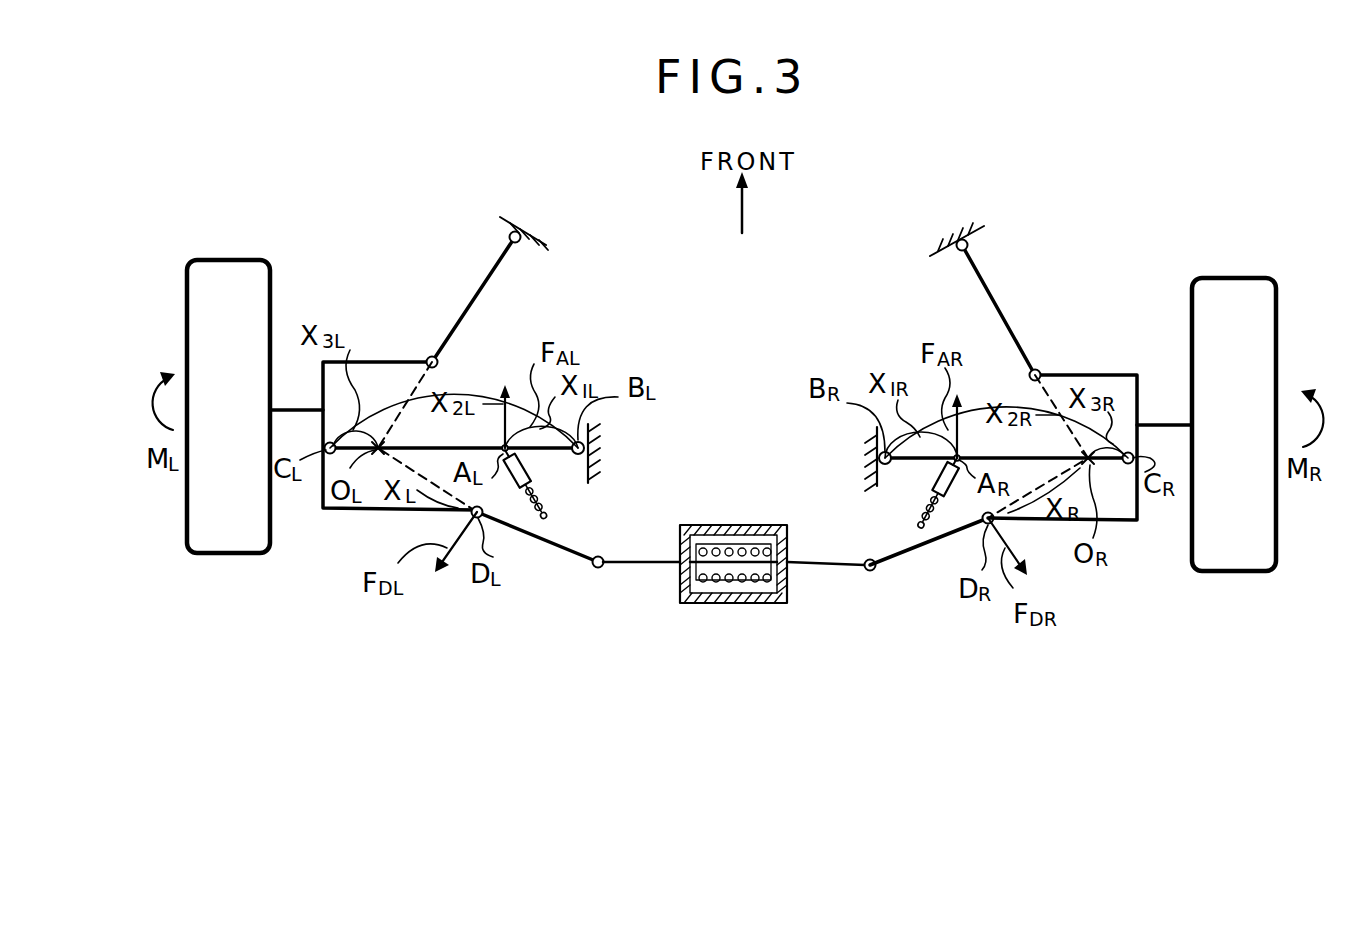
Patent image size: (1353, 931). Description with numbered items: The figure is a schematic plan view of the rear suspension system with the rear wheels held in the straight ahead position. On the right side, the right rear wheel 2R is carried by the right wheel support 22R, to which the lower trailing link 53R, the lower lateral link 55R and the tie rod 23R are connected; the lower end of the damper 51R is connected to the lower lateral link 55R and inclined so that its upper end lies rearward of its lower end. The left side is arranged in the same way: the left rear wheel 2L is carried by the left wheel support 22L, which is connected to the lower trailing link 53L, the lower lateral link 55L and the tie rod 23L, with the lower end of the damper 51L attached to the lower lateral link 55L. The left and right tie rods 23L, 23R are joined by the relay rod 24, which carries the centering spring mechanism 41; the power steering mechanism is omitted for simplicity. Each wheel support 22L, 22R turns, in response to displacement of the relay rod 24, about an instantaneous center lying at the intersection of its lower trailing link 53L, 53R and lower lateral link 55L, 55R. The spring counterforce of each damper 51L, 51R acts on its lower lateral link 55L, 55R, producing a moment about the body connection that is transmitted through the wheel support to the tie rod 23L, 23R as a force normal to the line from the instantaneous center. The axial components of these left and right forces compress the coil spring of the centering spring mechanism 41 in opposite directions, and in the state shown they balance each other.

The left rear wheel 2L is at (230, 540).
The right rear wheel 2R is at (1237, 557).
The left wheel support 22L is at (318, 500).
The right wheel support 22R is at (1147, 522).
The left tie rod 23L is at (543, 540).
The right tie rod 23R is at (917, 555).
The relay rod 24 is at (830, 567).
The centering spring mechanism 41 is at (733, 616).
The left damper 51L is at (560, 499).
The right damper 51R is at (898, 510).
The left lower trailing link 53L is at (478, 290).
The right lower trailing link 53R is at (995, 300).
The left lower lateral link 55L is at (553, 452).
The right lower lateral link 55R is at (870, 470).